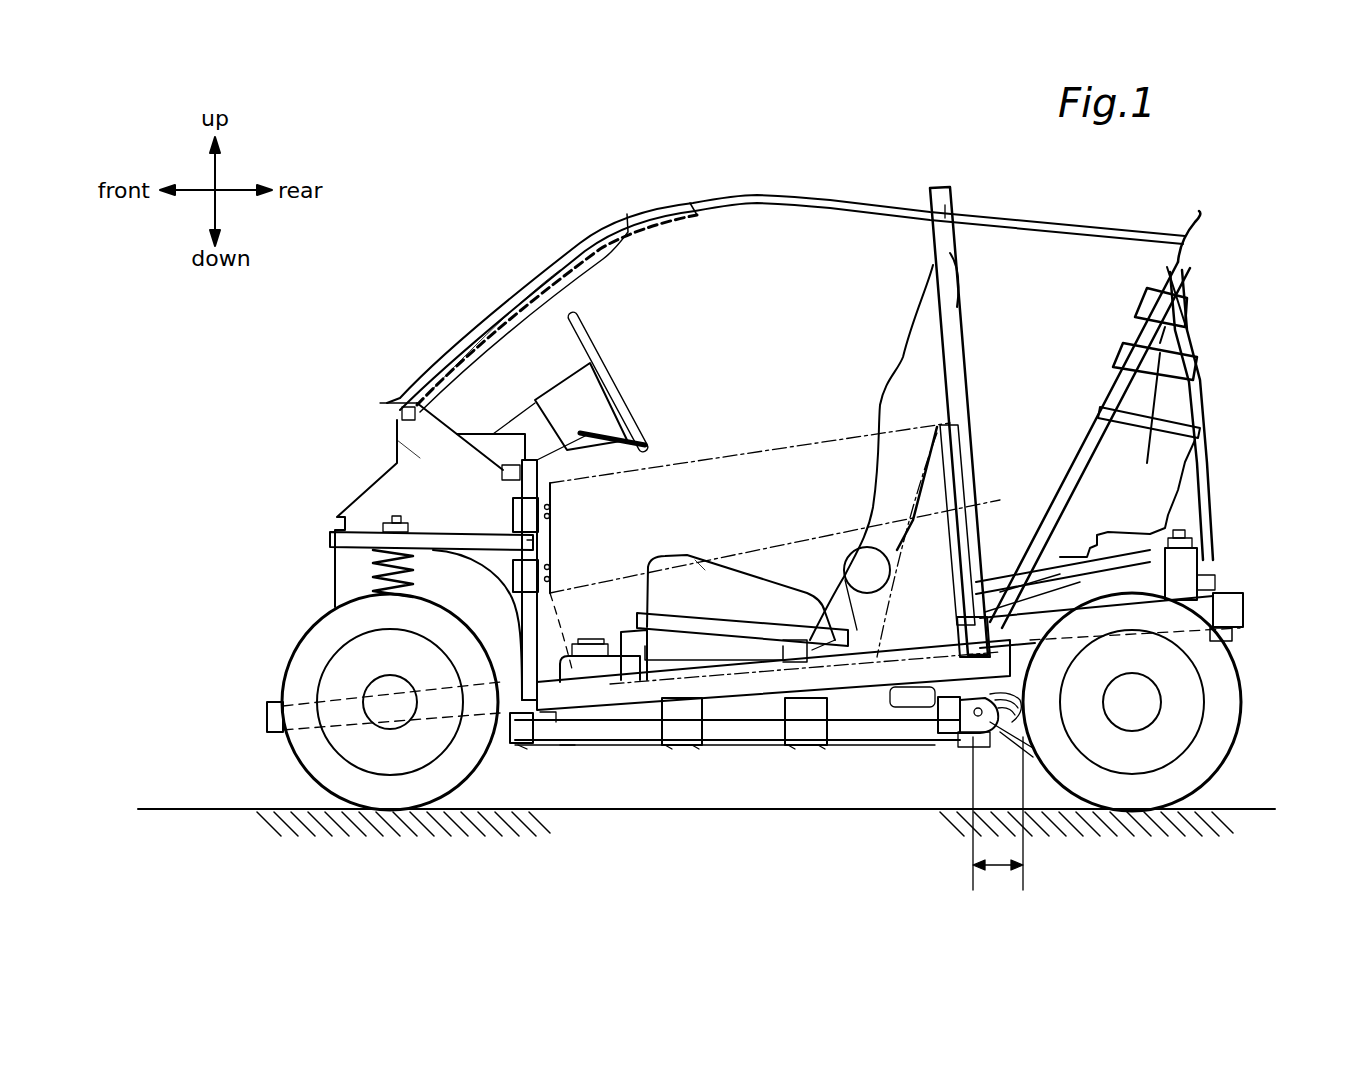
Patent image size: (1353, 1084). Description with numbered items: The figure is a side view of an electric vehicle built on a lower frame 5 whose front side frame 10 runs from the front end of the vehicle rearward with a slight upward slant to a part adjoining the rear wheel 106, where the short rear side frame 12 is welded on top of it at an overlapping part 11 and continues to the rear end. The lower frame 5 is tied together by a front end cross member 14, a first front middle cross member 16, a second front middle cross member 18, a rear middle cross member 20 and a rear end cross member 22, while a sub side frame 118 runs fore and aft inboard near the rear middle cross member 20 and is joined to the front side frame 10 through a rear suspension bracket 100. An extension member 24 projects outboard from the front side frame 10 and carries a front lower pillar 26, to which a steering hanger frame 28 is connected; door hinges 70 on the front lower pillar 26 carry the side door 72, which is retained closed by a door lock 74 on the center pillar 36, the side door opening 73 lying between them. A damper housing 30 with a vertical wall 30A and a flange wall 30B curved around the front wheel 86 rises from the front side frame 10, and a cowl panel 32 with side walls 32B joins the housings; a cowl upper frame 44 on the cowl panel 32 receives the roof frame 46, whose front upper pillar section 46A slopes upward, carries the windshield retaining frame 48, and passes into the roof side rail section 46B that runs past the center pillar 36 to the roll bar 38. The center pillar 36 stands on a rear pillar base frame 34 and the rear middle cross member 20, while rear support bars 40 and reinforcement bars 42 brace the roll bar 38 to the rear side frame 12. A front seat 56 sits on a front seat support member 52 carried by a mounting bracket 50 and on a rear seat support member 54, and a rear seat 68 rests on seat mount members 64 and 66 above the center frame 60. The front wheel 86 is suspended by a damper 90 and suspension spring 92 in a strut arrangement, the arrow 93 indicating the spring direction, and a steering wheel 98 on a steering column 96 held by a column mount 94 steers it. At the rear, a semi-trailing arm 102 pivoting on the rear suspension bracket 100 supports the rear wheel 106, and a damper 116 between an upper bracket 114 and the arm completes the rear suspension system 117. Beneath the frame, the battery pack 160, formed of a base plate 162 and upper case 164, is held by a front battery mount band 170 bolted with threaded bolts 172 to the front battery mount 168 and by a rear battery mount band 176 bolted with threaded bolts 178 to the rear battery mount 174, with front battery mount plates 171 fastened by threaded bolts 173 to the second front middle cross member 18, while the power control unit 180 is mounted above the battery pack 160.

The lower frame 5 is at (858, 698).
The front side frame 10 is at (590, 700).
The overlapping part 11 is at (997, 870).
The rear side frame 12 is at (1243, 607).
The front end cross member 14 is at (267, 716).
The first front middle cross member 16 is at (340, 607).
The second front middle cross member 18 is at (517, 730).
The rear middle cross member 20 is at (1013, 593).
The rear end cross member 22 is at (1233, 637).
The extension member 24 is at (543, 730).
The front lower pillar 26 is at (540, 632).
The steering hanger frame 28 is at (520, 472).
The damper housing 30 is at (477, 597).
The vertical wall 30A is at (503, 657).
The flange wall 30B is at (432, 550).
The cowl panel 32 is at (390, 497).
The side wall 32B is at (420, 456).
The rear pillar base frame 34 is at (958, 656).
The center pillar 36 is at (950, 330).
The roll bar 38 is at (1082, 445).
The rear support bar 40 is at (1207, 462).
The reinforcement bar 42 is at (1175, 425).
The cowl upper frame 44 is at (402, 400).
The roof frame 46 is at (776, 197).
The front upper pillar section 46A is at (588, 240).
The roof side rail section 46B is at (880, 205).
The windshield retaining frame 48 is at (495, 325).
The mounting bracket 50 is at (630, 700).
The front seat support member 52 is at (635, 640).
The rear seat support member 54 is at (795, 648).
The front seat 56 is at (727, 560).
The center frame 60 is at (1027, 603).
The seat mount member 64 is at (990, 600).
The seat mount member 66 is at (1190, 550).
The rear seat 68 is at (1092, 547).
The door hinge 70 is at (522, 522).
The side door 72 is at (763, 445).
The side door opening 73 is at (781, 292).
The door lock 74 is at (950, 470).
The front wheel 86 is at (302, 660).
The damper 90 is at (375, 578).
The suspension spring 92 is at (373, 555).
The spring load direction 93 is at (368, 589).
The column mount 94 is at (485, 455).
The steering column 96 is at (552, 398).
The steering wheel 98 is at (590, 333).
The rear suspension bracket 100 is at (950, 735).
The semi-trailing arm 102 is at (1023, 740).
The rear wheel 106 is at (1212, 758).
The upper bracket 114 is at (1215, 588).
The damper 116 is at (1195, 577).
The rear suspension system 117 is at (1045, 772).
The sub side frame 118 is at (988, 742).
The battery pack 160 is at (727, 758).
The base plate 162 is at (757, 738).
The upper case 164 is at (710, 567).
The front battery mount 168 is at (678, 660).
The front battery mount band 170 is at (680, 752).
The front battery mount plate 171 is at (568, 748).
The threaded bolt 172 is at (665, 748).
The threaded bolt 173 is at (527, 748).
The rear battery mount 174 is at (815, 645).
The rear battery mount band 176 is at (807, 748).
The threaded bolt 178 is at (792, 748).
The power control unit 180 is at (915, 598).